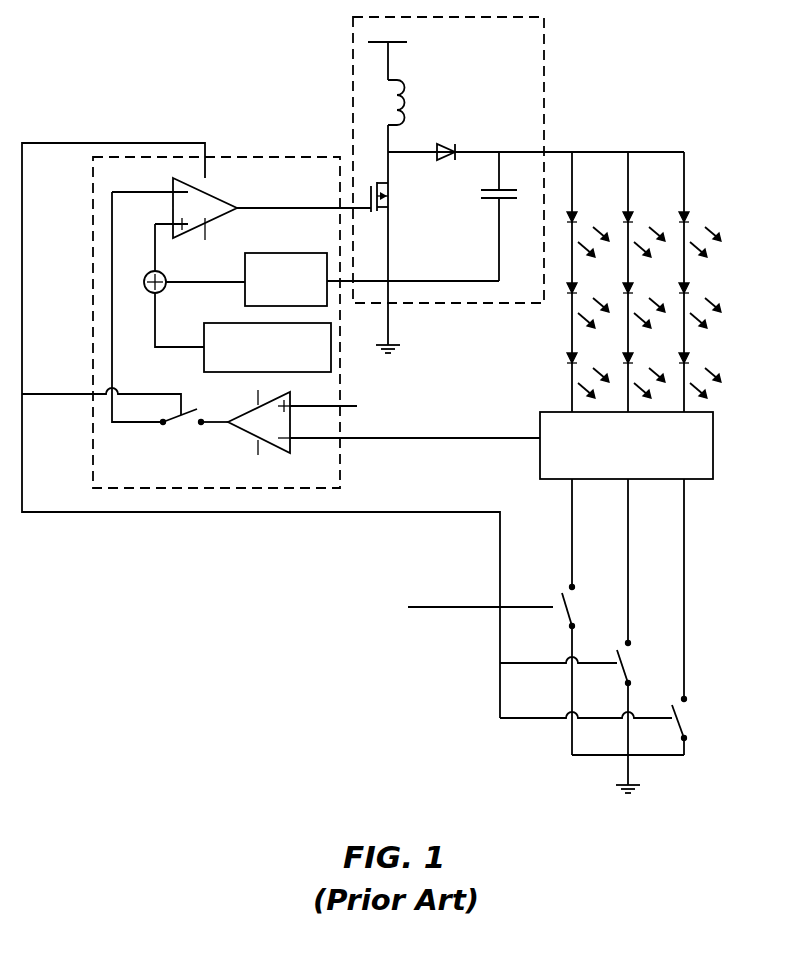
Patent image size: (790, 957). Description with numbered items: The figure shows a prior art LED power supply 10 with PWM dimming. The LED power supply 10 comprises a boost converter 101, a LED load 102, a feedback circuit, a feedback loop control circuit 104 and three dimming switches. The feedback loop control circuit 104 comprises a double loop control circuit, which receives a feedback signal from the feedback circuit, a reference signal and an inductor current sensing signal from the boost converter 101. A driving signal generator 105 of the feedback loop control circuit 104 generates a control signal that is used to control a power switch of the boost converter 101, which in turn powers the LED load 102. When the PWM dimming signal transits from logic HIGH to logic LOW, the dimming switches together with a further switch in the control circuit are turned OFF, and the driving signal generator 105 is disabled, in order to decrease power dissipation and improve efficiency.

The LED power supply 10 is at (301, 72).
The boost converter 101 is at (544, 66).
The LED load 102 is at (692, 228).
The feedback loop control circuit 104 is at (244, 157).
The driving signal generator 105 is at (221, 211).